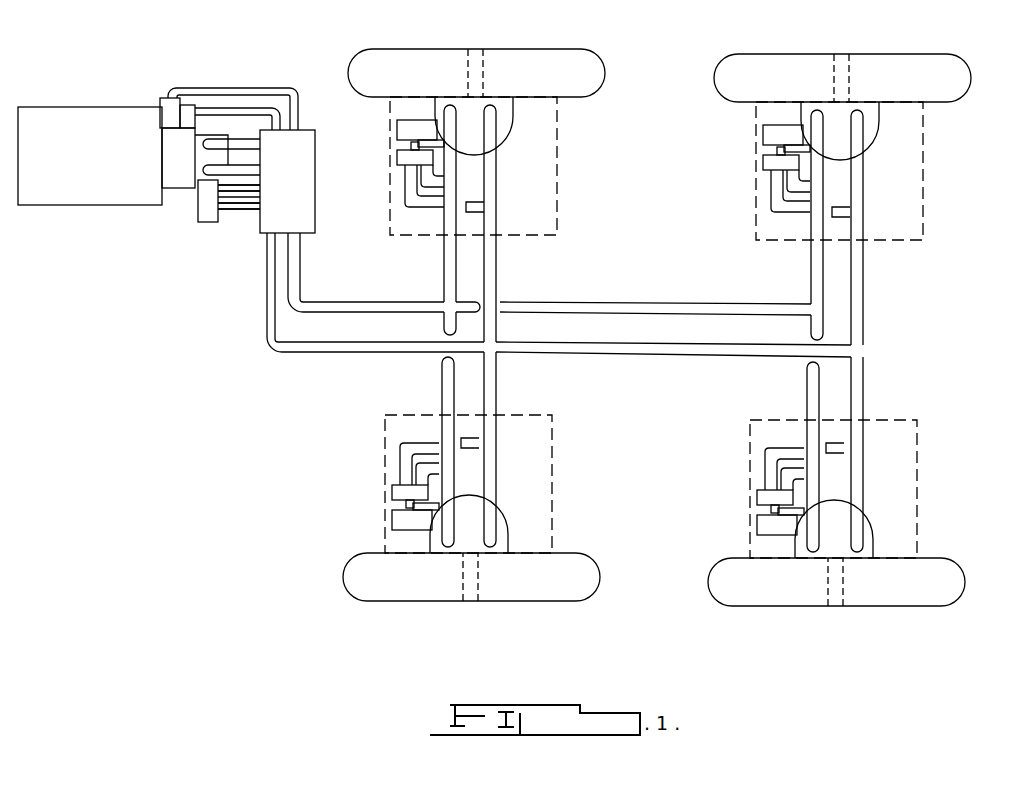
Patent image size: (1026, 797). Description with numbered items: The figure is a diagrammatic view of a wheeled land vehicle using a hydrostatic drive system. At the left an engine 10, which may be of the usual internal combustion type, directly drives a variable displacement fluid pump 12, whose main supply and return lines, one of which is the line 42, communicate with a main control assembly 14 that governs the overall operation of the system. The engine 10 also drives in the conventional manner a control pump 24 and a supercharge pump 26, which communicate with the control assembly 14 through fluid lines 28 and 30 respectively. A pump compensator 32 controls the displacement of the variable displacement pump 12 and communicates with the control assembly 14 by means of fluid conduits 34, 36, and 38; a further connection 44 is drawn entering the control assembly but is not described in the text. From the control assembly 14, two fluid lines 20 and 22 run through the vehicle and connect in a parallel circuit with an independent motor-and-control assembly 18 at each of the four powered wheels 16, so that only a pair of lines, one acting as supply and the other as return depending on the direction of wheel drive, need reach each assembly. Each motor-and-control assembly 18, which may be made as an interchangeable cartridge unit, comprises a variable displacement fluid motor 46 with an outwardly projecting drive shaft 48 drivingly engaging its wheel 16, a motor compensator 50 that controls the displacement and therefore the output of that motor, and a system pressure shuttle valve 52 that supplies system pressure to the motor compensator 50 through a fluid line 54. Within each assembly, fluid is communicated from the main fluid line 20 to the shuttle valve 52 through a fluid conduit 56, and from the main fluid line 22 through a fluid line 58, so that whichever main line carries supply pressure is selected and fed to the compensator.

The engine 10 is at (98, 160).
The variable displacement fluid pump 12 is at (182, 178).
The main control assembly 14 is at (315, 183).
The powered wheel 16 is at (558, 57).
The motor-and-control assembly 18 is at (558, 152).
The fluid line 20 is at (300, 267).
The fluid line 22 is at (270, 282).
The control pump 24 is at (168, 102).
The supercharge pump 26 is at (187, 110).
The fluid line 28 is at (237, 92).
The fluid line 30 is at (257, 112).
The pump compensator 32 is at (202, 215).
The fluid conduit 34 is at (232, 220).
The fluid conduit 36 is at (262, 207).
The fluid conduit 38 is at (262, 190).
The main return line 42 is at (262, 174).
The connecting conduit 44 is at (262, 147).
The variable displacement fluid motor 46 is at (512, 113).
The drive shaft 48 is at (492, 65).
The motor compensator 50 is at (400, 127).
The system pressure shuttle valve 52 is at (398, 157).
The fluid line 54 is at (411, 147).
The fluid conduit 56 is at (431, 188).
The fluid line 58 is at (400, 195).